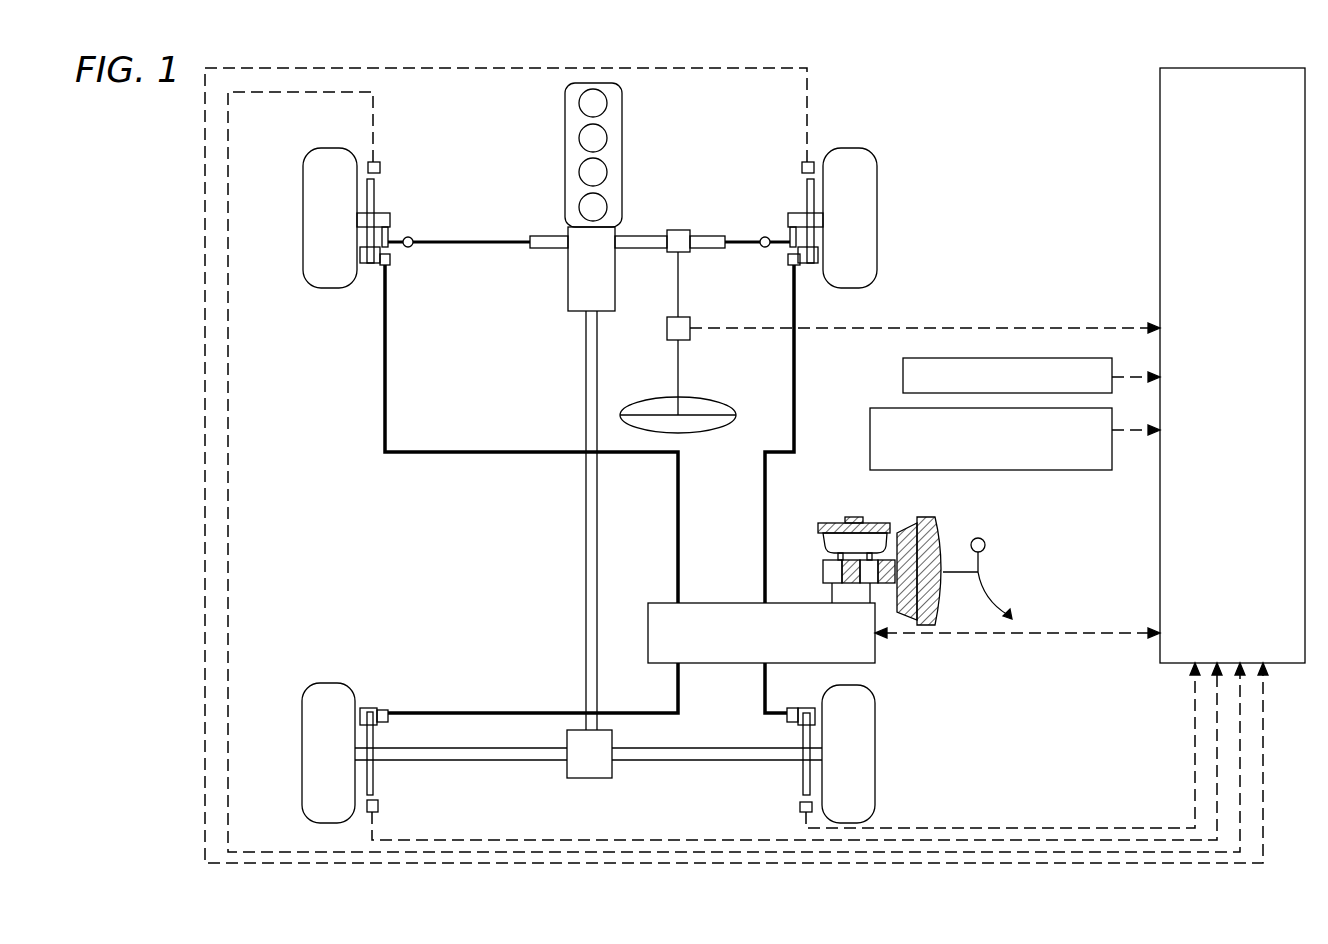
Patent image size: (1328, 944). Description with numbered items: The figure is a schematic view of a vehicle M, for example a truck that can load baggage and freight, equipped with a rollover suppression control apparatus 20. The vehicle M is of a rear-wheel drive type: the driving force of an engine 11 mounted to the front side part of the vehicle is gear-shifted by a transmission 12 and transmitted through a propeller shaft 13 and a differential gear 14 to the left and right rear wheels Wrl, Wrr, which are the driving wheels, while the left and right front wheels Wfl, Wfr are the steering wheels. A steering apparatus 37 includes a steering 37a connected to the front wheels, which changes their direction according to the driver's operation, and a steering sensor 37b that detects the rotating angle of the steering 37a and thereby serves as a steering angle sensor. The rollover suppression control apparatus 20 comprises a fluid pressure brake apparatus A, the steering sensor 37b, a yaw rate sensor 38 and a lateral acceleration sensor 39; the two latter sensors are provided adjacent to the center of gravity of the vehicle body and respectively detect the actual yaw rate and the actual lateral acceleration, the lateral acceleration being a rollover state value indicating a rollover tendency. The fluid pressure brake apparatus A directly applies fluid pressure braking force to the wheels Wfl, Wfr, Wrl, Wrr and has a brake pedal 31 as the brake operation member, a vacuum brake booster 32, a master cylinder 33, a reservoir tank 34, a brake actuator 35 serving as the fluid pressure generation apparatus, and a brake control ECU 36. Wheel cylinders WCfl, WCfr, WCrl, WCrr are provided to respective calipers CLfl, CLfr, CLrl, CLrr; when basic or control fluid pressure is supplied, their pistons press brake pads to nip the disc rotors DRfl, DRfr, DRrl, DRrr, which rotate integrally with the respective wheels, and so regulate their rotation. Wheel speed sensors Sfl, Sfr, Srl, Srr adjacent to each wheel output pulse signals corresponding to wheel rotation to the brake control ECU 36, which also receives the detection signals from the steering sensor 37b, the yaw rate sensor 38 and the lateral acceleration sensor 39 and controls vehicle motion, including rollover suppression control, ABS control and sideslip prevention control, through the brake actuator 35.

The engine 11 is at (565, 135).
The transmission 12 is at (568, 262).
The propeller shaft 13 is at (586, 378).
The differential gear 14 is at (612, 776).
The rollover suppression control apparatus 20 is at (360, 391).
The brake pedal 31 is at (985, 588).
The vacuum brake booster 32 is at (912, 535).
The master cylinder 33 is at (823, 570).
The reservoir tank 34 is at (856, 518).
The brake actuator 35 is at (745, 603).
The brake control ECU 36 is at (1160, 212).
The steering apparatus 37 is at (668, 206).
The steering 37a is at (695, 399).
The steering sensor 37b is at (690, 322).
The yaw rate sensor 38 is at (903, 376).
The lateral acceleration sensor 39 is at (870, 436).
The fluid pressure brake apparatus A is at (655, 578).
The vehicle M is at (178, 333).
The left front wheel Wfl is at (303, 218).
The right front wheel Wfr is at (877, 218).
The left rear wheel Wrl is at (302, 752).
The right rear wheel Wrr is at (875, 752).
The disc rotor DRfl is at (367, 232).
The disc rotor DRfr is at (814, 232).
The disc rotor DRrl is at (373, 790).
The disc rotor DRrr is at (803, 790).
The caliper CLfl is at (360, 256).
The caliper CLfr is at (818, 256).
The caliper CLrl is at (377, 725).
The caliper CLrr is at (798, 725).
The wheel cylinder WCfl is at (381, 266).
The wheel cylinder WCfr is at (800, 266).
The wheel cylinder WCrl is at (385, 708).
The wheel cylinder WCrr is at (790, 708).
The wheel speed sensor Sfl is at (370, 162).
The wheel speed sensor Sfr is at (802, 168).
The wheel speed sensor Srl is at (378, 808).
The wheel speed sensor Srr is at (800, 808).